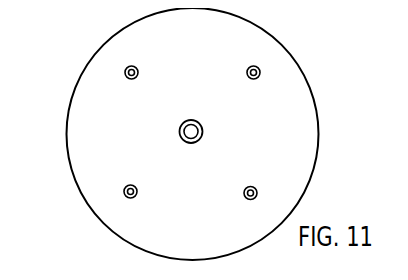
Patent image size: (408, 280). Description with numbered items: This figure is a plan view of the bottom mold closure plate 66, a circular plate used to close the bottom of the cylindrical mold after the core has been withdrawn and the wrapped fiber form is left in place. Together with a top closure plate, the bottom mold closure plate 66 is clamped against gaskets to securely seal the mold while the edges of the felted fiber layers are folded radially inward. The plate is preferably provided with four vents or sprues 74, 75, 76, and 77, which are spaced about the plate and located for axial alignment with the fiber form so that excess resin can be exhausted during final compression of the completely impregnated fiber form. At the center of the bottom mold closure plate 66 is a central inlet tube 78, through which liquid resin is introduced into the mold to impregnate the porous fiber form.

The bottom mold closure plate 66 is at (77, 130).
The vent or sprue 74 is at (128, 60).
The vent or sprue 75 is at (241, 60).
The vent or sprue 76 is at (239, 179).
The vent or sprue 77 is at (120, 177).
The central inlet tube 78 is at (195, 124).